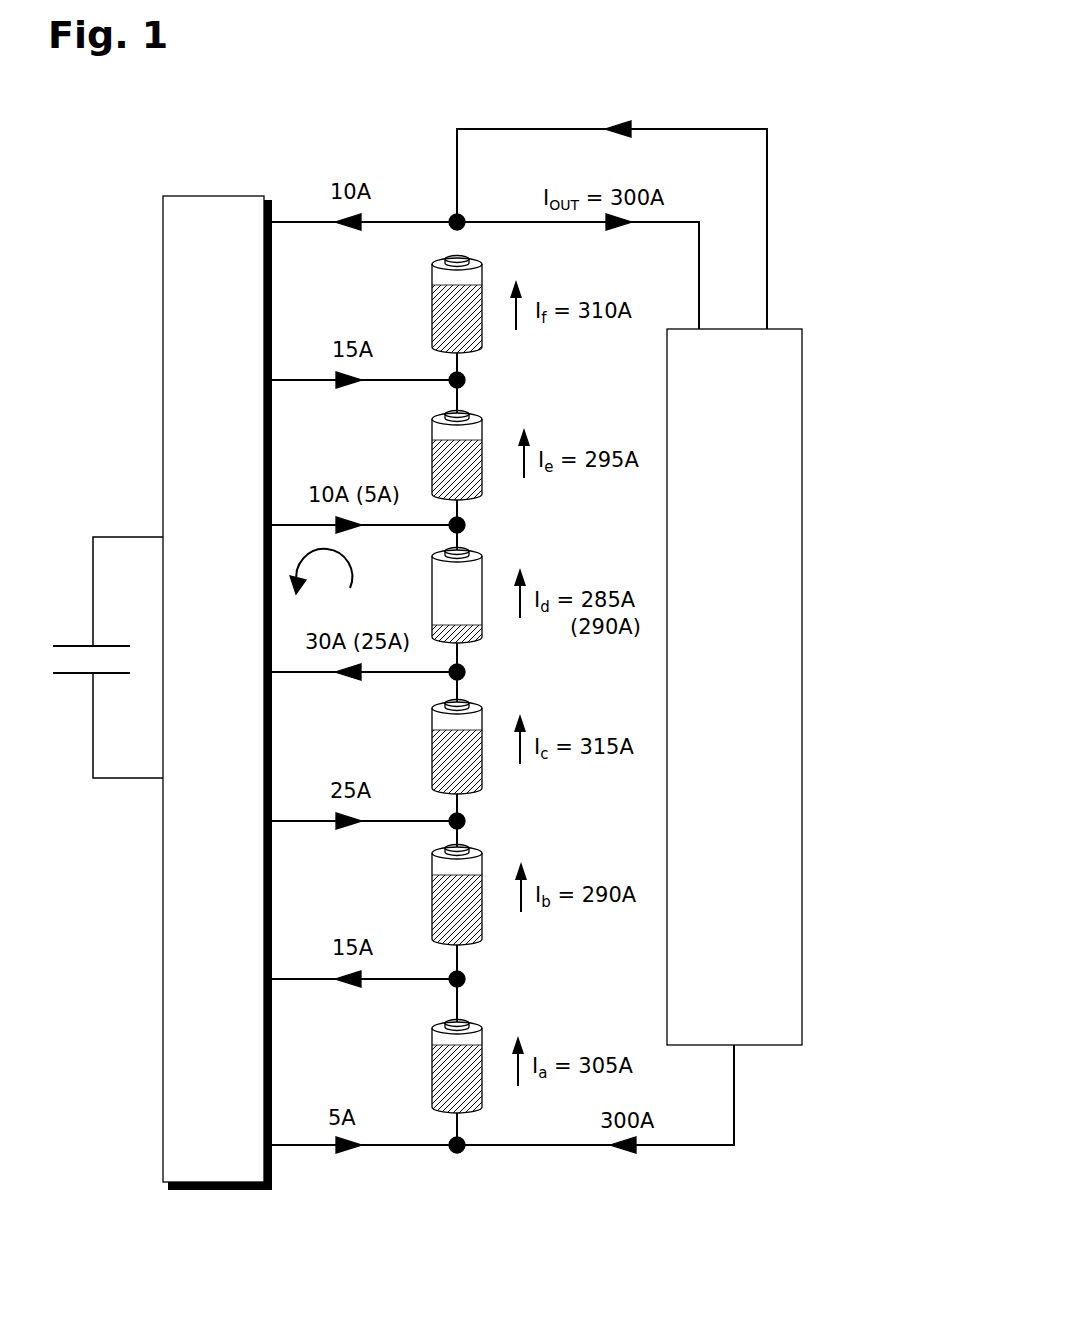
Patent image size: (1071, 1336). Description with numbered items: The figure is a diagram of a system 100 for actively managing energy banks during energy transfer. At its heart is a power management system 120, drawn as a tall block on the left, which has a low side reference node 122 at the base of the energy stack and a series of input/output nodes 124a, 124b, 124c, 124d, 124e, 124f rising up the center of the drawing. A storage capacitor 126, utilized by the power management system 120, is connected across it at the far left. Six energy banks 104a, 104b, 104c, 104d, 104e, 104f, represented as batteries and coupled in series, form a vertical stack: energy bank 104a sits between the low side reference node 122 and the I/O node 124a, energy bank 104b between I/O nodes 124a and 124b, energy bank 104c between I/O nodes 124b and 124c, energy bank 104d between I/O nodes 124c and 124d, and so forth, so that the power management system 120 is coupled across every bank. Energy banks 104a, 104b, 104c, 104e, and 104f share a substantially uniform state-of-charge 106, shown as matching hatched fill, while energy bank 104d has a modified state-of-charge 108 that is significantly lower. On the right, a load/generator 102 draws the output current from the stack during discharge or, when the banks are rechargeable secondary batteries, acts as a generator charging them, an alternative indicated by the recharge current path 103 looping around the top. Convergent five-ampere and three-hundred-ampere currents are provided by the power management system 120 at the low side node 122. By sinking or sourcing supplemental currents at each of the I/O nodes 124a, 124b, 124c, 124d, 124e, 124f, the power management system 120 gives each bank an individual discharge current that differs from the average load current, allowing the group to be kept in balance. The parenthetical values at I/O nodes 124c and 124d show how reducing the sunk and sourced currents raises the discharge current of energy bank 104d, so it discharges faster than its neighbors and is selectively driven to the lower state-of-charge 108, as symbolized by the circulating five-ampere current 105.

The system 100 is at (750, 100).
The load/generator 102 is at (802, 677).
The recharge current path 103 is at (767, 243).
The energy bank 104a is at (432, 1062).
The energy bank 104b is at (432, 888).
The energy bank 104c is at (432, 742).
The energy bank 104d is at (432, 597).
The energy bank 104e is at (432, 440).
The energy bank 104f is at (432, 303).
The circulating 5 A current 105 is at (352, 572).
The state-of-charge 106 is at (476, 343).
The modified state-of-charge 108 is at (478, 633).
The power management system 120 is at (163, 310).
The low side reference node 122 is at (464, 1150).
The input/output node 124a is at (464, 982).
The input/output node 124b is at (464, 824).
The input/output node 124c is at (464, 675).
The input/output node 124d is at (464, 528).
The input/output node 124e is at (464, 383).
The input/output node 124f is at (448, 229).
The storage capacitor 126 is at (64, 678).